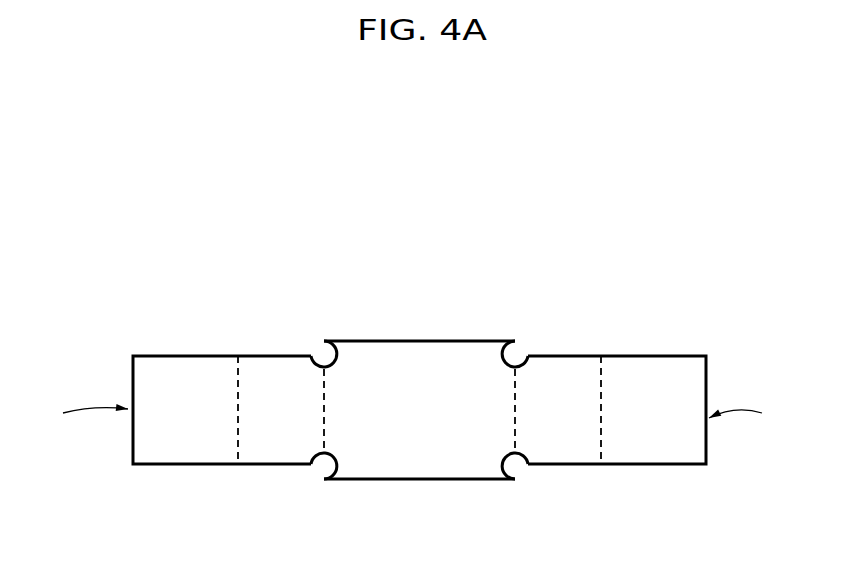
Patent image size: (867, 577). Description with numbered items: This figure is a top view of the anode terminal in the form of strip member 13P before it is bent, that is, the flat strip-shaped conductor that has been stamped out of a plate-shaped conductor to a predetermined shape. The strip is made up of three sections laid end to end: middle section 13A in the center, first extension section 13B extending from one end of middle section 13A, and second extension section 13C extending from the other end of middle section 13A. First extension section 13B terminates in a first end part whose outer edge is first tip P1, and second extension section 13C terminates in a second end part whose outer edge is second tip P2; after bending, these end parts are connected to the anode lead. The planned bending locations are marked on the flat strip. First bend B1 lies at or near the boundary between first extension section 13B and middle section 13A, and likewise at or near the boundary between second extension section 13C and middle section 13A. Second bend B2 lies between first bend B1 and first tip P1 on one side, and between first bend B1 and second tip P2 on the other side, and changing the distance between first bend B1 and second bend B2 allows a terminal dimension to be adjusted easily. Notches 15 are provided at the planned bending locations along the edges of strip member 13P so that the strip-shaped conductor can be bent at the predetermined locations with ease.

The strip member 13P is at (479, 222).
The middle section 13A is at (513, 328).
The first extension section 13B is at (313, 328).
The second extension section 13C is at (708, 328).
The notch 15 is at (324, 356).
The first bend B1 is at (515, 410).
The second bend B2 is at (240, 428).
The first tip P1 is at (80, 411).
The second tip P2 is at (754, 418).